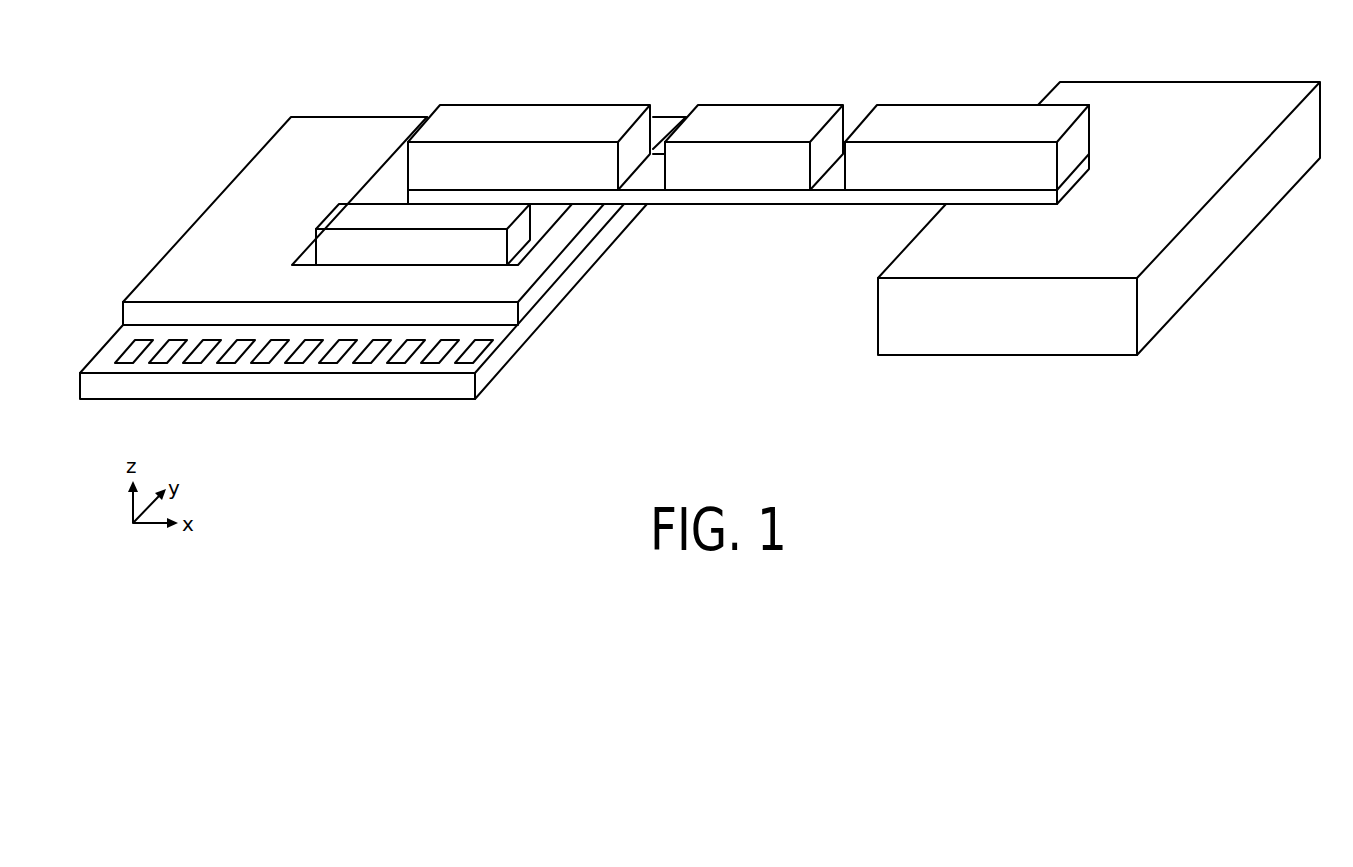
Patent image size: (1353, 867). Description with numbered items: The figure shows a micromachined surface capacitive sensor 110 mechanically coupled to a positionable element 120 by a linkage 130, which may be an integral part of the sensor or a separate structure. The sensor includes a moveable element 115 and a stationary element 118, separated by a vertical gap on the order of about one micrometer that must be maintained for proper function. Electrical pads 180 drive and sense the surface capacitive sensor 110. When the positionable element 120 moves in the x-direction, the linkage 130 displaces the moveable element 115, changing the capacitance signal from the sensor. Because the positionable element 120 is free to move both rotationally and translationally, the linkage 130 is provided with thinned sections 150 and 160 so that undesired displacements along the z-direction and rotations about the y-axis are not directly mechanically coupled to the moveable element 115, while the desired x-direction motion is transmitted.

The micromachined surface capacitive sensor 110 is at (383, 226).
The moveable element 115 is at (373, 187).
The stationary element 118 is at (270, 187).
The positionable element 120 is at (1146, 116).
The linkage 130 is at (748, 160).
The thinned section 150 is at (640, 180).
The thinned section 160 is at (822, 180).
The electrical pads 180 is at (470, 355).